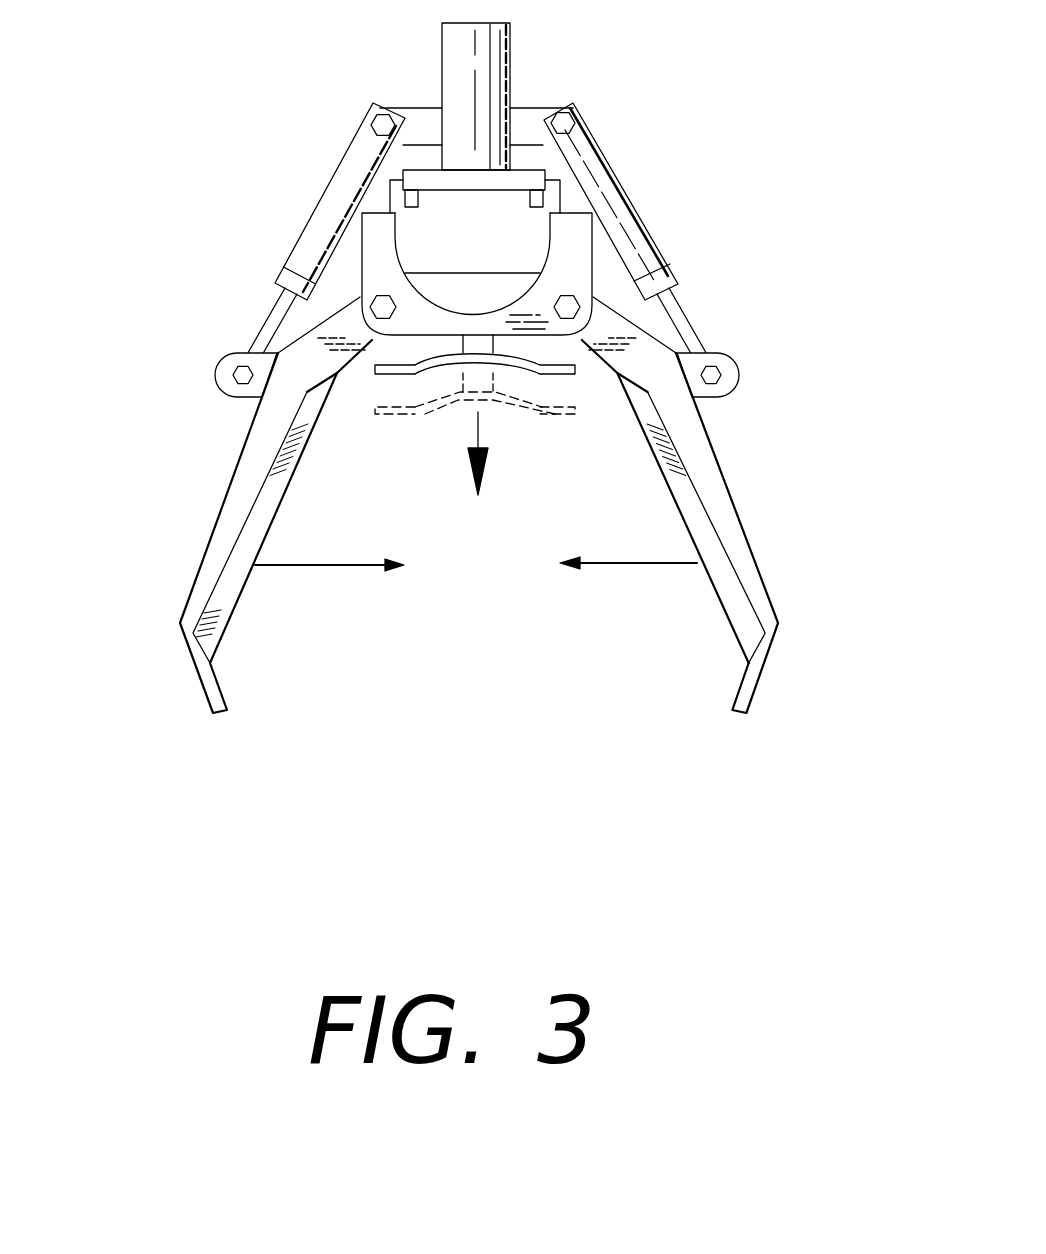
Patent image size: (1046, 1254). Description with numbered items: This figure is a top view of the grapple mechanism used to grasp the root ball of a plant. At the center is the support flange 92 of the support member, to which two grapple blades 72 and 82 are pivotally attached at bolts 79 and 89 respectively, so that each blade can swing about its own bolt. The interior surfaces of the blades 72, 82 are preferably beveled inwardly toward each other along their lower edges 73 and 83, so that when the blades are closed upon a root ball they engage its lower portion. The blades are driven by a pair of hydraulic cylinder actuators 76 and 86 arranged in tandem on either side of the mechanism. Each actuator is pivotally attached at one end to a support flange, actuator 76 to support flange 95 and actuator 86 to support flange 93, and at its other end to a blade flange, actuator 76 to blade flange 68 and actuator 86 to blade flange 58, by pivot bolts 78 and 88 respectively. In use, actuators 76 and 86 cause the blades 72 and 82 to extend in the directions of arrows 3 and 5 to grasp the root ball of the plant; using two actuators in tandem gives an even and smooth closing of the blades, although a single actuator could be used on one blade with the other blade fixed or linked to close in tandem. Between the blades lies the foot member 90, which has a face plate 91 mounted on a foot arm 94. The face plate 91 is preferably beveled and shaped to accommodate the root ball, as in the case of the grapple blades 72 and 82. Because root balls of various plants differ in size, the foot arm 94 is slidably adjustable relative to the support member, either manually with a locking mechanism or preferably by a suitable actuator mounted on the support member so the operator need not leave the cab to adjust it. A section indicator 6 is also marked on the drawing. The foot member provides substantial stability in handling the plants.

The support flange 93 is at (535, 103).
The support flange 95 is at (420, 107).
The support flange 92 is at (570, 255).
The bolt 79 is at (375, 290).
The bolt 89 is at (572, 295).
The hydraulic cylinder actuator 76 is at (355, 152).
The hydraulic cylinder actuator 86 is at (600, 125).
The pivot bolt 78 is at (232, 358).
The pivot bolt 88 is at (735, 370).
The blade flange 68 is at (235, 397).
The blade flange 58 is at (735, 397).
The grapple blade 72 is at (222, 527).
The grapple blade 82 is at (745, 527).
The lower edge 73 is at (235, 612).
The lower edge 83 is at (713, 597).
The face plate 91 is at (377, 375).
The foot arm 94 is at (545, 365).
The foot member 90 is at (425, 392).
The section line 6 is at (494, 453).
The arrow 3 is at (329, 546).
The arrow 5 is at (628, 545).